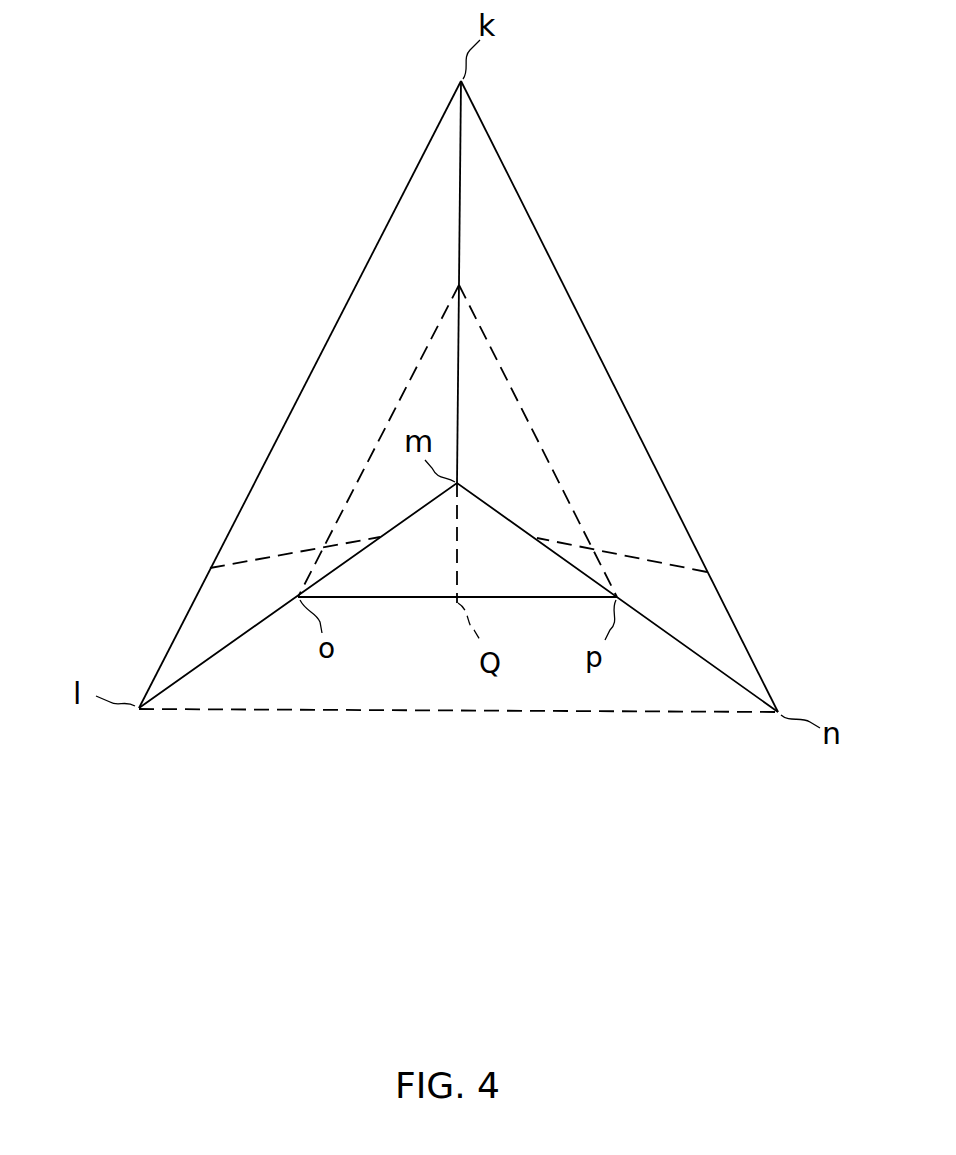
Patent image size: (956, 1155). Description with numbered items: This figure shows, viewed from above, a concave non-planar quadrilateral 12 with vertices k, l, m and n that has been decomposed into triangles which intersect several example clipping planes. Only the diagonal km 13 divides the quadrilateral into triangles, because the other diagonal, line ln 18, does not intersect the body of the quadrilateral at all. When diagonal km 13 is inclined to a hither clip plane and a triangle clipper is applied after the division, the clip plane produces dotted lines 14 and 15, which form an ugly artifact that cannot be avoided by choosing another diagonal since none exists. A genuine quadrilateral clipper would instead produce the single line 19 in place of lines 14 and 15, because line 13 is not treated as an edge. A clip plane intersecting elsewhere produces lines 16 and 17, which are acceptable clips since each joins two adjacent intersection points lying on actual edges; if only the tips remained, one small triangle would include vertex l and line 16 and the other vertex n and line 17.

The quadrilateral 12 is at (570, 298).
The diagonal km 13 is at (458, 400).
The dotted line 14 is at (375, 440).
The dotted line 15 is at (540, 436).
The line 16 is at (290, 548).
The line 17 is at (637, 556).
The line ln 18 is at (290, 713).
The line 19 is at (400, 600).